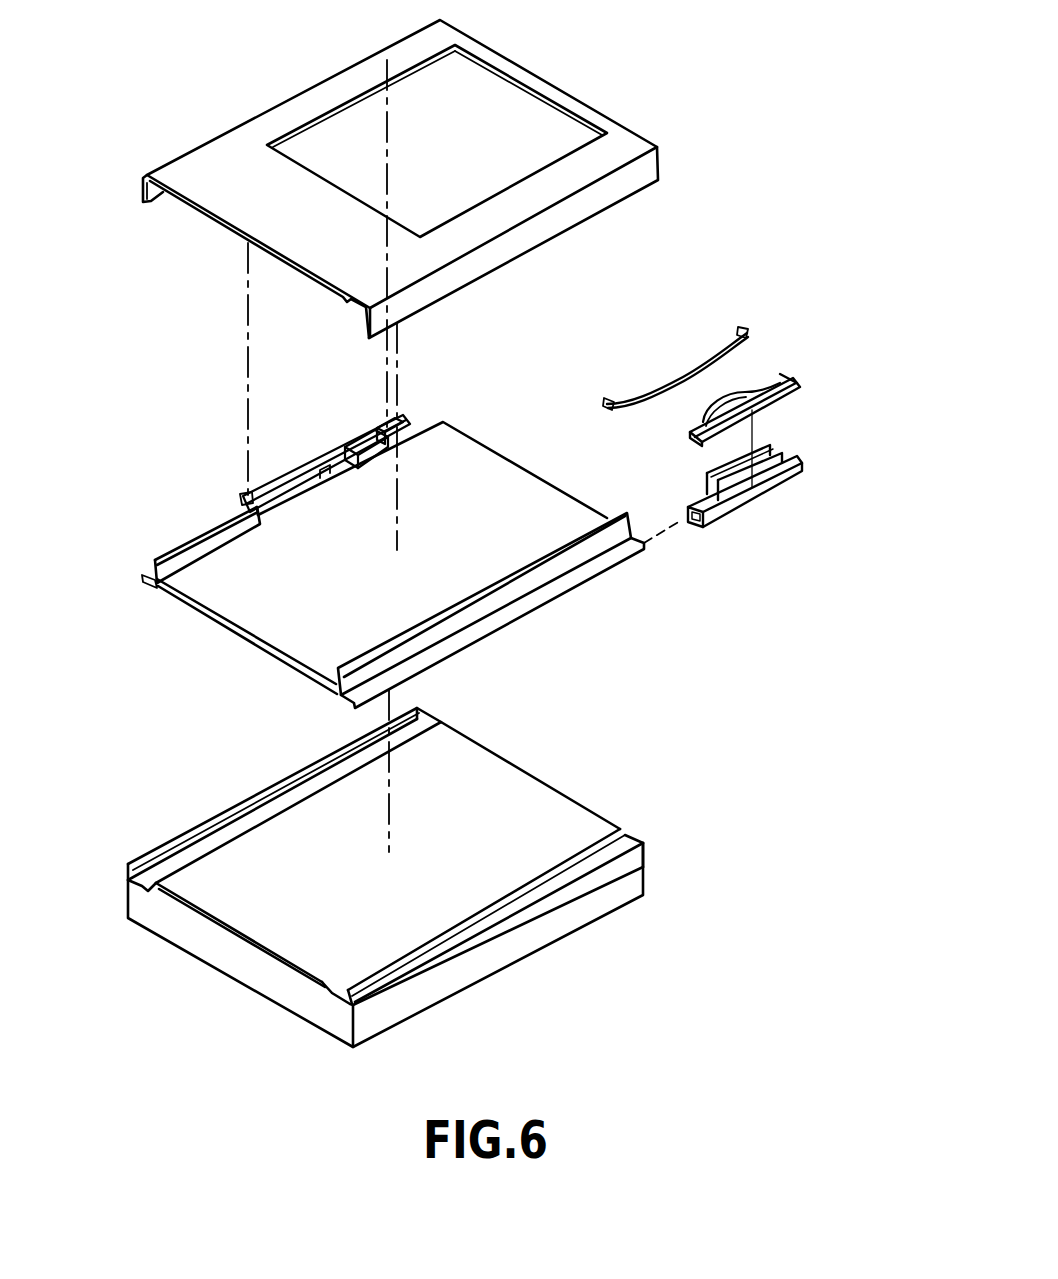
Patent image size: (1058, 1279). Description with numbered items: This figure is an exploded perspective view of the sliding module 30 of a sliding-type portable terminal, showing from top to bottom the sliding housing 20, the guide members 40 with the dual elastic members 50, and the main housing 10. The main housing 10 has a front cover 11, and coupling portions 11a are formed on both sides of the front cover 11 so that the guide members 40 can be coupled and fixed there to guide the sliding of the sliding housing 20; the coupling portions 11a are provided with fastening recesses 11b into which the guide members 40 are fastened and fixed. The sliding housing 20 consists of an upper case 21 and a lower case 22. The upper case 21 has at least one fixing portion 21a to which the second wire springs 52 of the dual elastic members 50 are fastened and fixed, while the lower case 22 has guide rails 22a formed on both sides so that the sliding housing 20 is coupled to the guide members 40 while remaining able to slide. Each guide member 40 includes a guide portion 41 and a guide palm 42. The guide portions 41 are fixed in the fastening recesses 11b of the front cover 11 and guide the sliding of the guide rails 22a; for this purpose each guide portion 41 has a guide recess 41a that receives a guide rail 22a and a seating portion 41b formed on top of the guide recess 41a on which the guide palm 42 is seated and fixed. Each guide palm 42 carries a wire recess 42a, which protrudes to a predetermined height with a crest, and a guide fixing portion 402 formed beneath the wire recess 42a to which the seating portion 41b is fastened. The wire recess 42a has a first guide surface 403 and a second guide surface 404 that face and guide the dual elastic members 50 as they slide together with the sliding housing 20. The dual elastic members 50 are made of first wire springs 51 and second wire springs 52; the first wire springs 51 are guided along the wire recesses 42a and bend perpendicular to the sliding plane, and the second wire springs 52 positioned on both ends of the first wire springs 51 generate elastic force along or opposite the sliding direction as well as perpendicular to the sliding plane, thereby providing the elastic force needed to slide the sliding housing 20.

The main housing 10 is at (350, 883).
The front cover 11 is at (221, 900).
The coupling portion 11a is at (336, 1000).
The fastening recess 11b is at (441, 945).
The sliding housing 20 is at (108, 477).
The upper case 21 is at (387, 429).
The fixing portion 21a is at (390, 63).
The lower case 22 is at (395, 583).
The guide rail 22a is at (341, 694).
The sliding module 30 is at (768, 106).
The guide member 40 is at (899, 385).
The guide portion 41 is at (787, 500).
The guide recess 41a is at (703, 524).
The seating portion 41b is at (747, 483).
The guide palm 42 is at (772, 422).
The wire recess 42a is at (779, 375).
The guide fixing portion 402 is at (790, 388).
The first guide surface 403 is at (753, 430).
The second guide surface 404 is at (770, 398).
The dual elastic member 50 is at (760, 274).
The first wire spring 51 is at (685, 377).
The second wire spring 52 is at (742, 330).